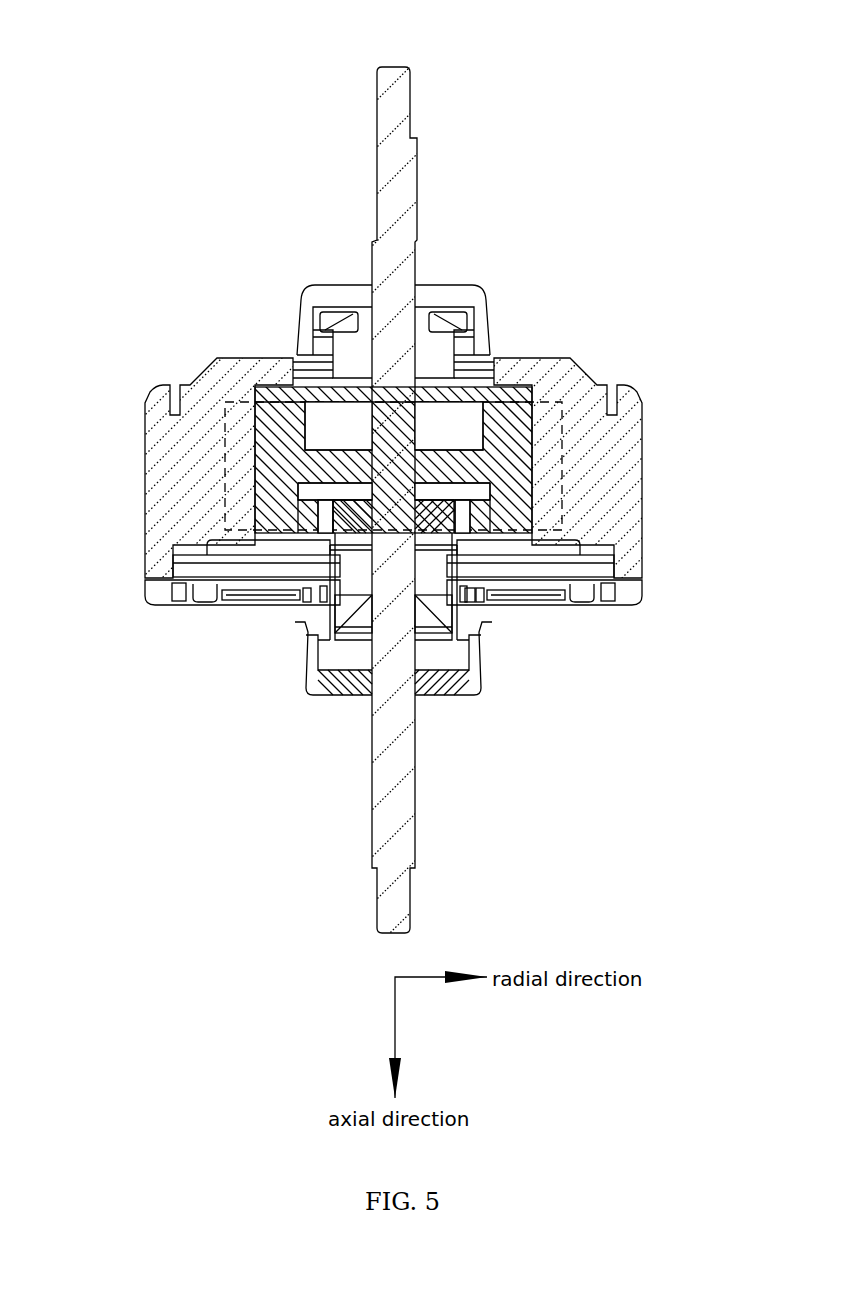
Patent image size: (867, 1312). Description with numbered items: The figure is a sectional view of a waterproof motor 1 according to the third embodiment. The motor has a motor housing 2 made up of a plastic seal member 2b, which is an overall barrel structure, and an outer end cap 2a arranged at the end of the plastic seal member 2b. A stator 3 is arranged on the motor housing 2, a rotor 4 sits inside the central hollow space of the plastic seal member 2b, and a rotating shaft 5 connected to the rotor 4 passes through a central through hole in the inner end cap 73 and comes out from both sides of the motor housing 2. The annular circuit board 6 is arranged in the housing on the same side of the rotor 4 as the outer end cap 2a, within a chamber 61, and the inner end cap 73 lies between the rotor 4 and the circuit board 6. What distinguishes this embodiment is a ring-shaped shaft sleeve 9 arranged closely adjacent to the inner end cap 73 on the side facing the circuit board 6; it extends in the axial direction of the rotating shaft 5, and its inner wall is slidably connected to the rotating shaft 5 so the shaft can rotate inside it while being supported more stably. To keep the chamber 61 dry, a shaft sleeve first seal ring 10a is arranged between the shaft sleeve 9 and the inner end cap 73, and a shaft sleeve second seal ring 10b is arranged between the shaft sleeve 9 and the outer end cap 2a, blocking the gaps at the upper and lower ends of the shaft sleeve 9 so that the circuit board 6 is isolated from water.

The waterproof motor 1 is at (200, 152).
The motor housing 2 is at (700, 588).
The outer end cap 2a is at (628, 550).
The plastic seal member 2b is at (597, 603).
The stator 3 is at (252, 472).
The rotor 4 is at (280, 462).
The rotating shaft 5 is at (397, 124).
The circuit board 6 is at (595, 562).
The chamber 61 is at (232, 548).
The inner end cap 73 is at (462, 520).
The shaft sleeve 9 is at (355, 602).
The shaft sleeve first seal ring 10a is at (490, 605).
The shaft sleeve second seal ring 10b is at (470, 675).